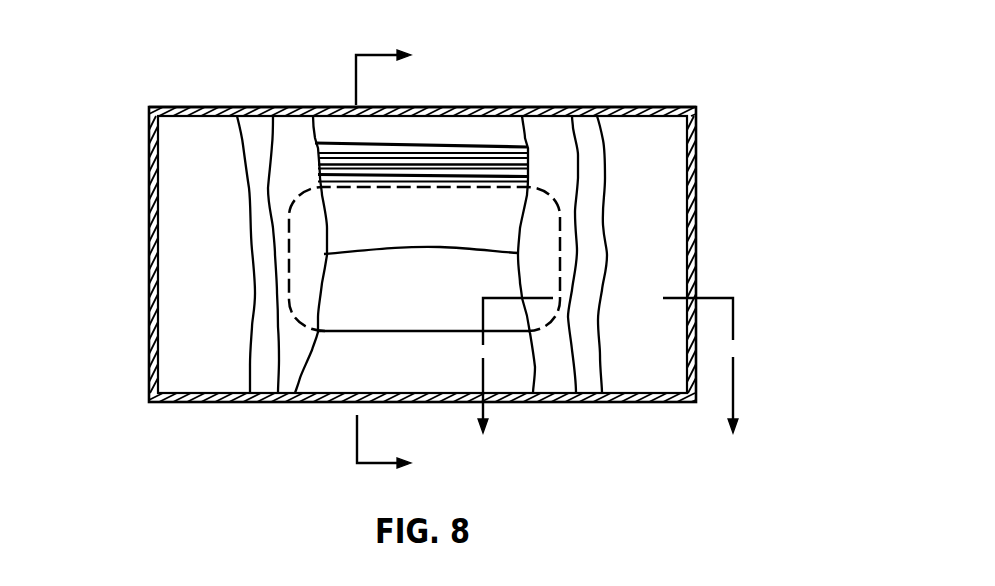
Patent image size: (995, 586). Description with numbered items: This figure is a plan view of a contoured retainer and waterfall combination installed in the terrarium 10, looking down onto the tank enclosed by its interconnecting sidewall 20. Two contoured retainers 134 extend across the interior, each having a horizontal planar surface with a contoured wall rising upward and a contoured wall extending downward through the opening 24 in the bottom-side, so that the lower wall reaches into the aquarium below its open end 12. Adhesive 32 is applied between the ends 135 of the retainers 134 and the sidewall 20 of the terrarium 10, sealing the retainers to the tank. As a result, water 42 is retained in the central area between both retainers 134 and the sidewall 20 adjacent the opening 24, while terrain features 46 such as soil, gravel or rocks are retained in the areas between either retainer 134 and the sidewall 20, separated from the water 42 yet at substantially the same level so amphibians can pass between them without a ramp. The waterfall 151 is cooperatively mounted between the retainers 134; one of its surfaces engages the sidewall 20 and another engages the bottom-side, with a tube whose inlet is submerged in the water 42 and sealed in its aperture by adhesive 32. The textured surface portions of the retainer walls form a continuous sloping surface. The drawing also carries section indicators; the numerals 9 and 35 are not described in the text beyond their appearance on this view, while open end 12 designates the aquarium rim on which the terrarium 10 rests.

The terrarium 10 is at (418, 239).
The sidewall 20 is at (505, 110).
The opening 24 is at (354, 330).
The adhesive 32 is at (237, 118).
The top wall 35 is at (274, 107).
The water 42 is at (424, 254).
The terrain features 46 is at (222, 270).
The retainer 134 is at (240, 189).
The ends of retainers 135 is at (480, 253).
The waterfall 151 is at (436, 128).
The section line 9- 9 is at (394, 263).
The open end 12 is at (609, 381).